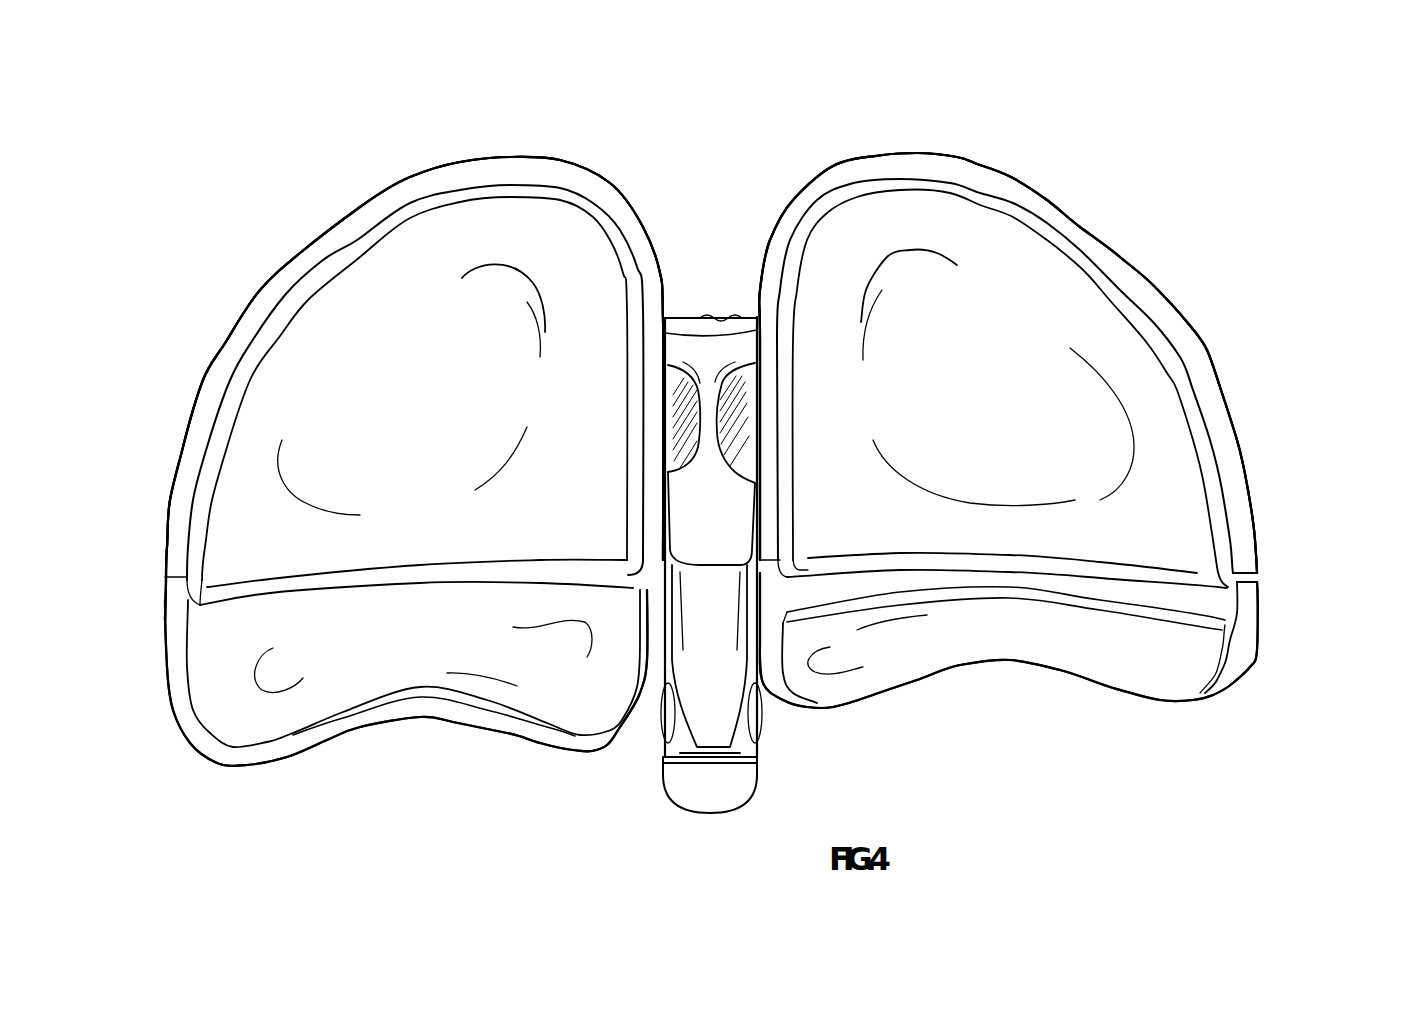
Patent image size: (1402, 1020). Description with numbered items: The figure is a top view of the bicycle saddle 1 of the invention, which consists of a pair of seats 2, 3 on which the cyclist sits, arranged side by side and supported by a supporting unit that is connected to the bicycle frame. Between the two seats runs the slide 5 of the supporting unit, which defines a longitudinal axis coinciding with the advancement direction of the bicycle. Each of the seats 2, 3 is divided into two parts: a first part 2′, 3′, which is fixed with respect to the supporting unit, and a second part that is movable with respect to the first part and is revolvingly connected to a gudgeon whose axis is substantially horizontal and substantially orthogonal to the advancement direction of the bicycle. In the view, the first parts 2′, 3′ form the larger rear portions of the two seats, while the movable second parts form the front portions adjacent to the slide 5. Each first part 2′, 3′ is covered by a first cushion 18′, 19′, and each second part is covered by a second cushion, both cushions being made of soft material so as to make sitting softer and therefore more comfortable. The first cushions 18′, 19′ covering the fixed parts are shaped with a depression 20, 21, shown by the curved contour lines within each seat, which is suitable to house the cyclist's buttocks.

The saddle 1 is at (1188, 203).
The seat 2 is at (173, 313).
The first part of seat 2′ is at (455, 183).
The seat 3 is at (1213, 330).
The first part of seat 3′ is at (827, 185).
The slide 5 is at (710, 697).
The first cushion 18′ is at (600, 227).
The first cushion 19′ is at (1210, 487).
The depression 20 is at (348, 341).
The depression 21 is at (967, 313).